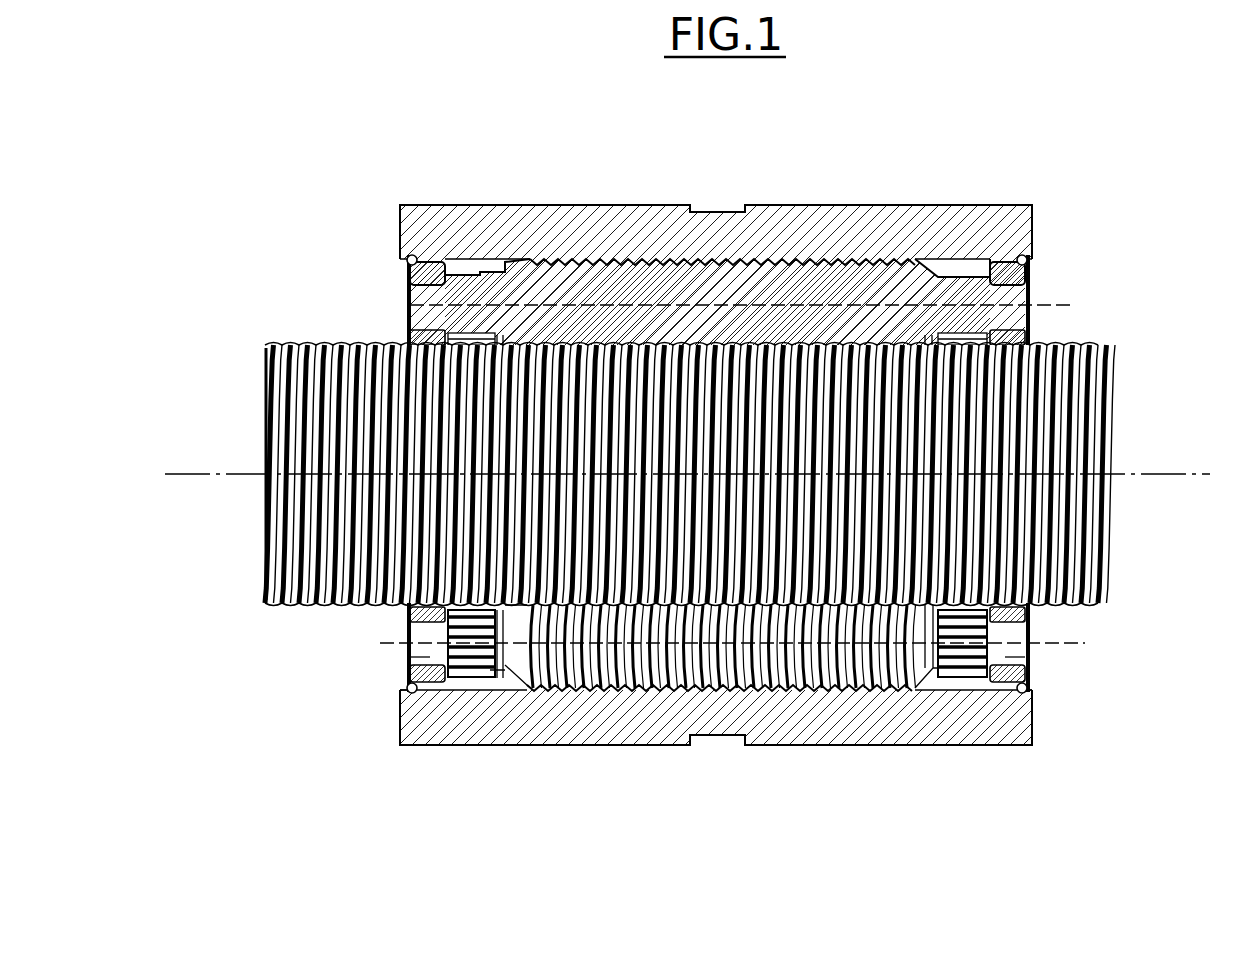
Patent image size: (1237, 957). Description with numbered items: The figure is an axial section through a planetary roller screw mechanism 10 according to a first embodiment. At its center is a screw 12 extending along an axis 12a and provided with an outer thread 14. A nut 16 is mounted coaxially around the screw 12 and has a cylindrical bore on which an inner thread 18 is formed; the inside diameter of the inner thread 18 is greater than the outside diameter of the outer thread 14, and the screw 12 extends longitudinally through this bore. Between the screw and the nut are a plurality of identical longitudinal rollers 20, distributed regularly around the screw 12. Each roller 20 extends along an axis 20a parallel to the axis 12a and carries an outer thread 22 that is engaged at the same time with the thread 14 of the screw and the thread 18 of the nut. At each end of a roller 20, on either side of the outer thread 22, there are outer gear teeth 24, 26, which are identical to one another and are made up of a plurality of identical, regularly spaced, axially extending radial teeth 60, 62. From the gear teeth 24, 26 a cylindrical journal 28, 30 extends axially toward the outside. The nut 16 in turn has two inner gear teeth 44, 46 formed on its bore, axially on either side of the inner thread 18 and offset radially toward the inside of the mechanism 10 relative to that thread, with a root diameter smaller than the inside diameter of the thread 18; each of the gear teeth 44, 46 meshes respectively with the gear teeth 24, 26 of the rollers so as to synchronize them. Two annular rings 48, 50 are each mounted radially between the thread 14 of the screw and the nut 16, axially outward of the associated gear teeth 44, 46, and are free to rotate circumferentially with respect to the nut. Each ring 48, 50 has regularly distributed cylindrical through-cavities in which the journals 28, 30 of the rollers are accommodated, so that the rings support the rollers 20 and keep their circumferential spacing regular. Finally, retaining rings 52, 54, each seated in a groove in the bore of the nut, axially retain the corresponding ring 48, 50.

The planetary roller screw mechanism 10 is at (693, 445).
The screw 12 is at (290, 344).
The axis of the screw 12a is at (1194, 471).
The outer thread 14 is at (346, 344).
The nut 16 is at (527, 207).
The inner thread 18 is at (627, 270).
The longitudinal roller 20 is at (769, 291).
The axis of the roller 20a is at (1070, 305).
The outer thread of the roller 22 is at (842, 261).
The outer gear teeth 24 is at (508, 684).
The outer gear teeth 26 is at (931, 689).
The cylindrical journal 28 is at (406, 660).
The cylindrical journal 30 is at (1031, 660).
The inner gear teeth 44 is at (450, 333).
The inner gear teeth 46 is at (1030, 335).
The annular ring 48 is at (440, 262).
The annular ring 50 is at (1005, 268).
The retaining ring 52 is at (408, 259).
The retaining ring 54 is at (1027, 259).
The radial teeth 60 is at (467, 655).
The radial teeth 62 is at (967, 660).